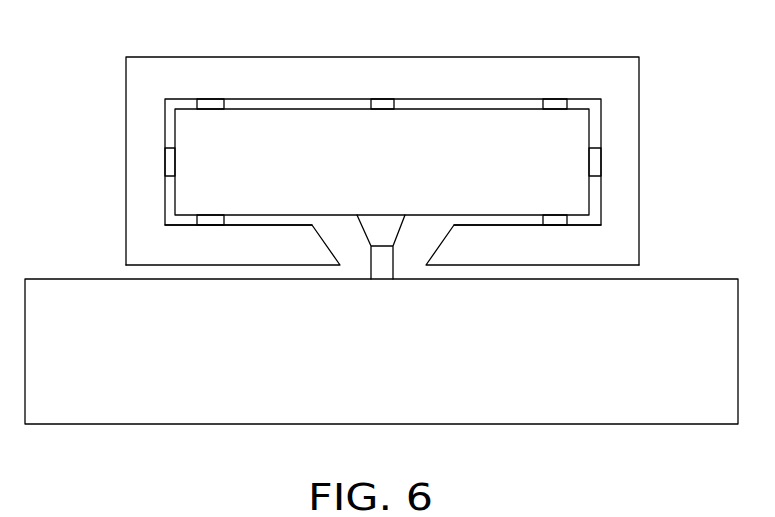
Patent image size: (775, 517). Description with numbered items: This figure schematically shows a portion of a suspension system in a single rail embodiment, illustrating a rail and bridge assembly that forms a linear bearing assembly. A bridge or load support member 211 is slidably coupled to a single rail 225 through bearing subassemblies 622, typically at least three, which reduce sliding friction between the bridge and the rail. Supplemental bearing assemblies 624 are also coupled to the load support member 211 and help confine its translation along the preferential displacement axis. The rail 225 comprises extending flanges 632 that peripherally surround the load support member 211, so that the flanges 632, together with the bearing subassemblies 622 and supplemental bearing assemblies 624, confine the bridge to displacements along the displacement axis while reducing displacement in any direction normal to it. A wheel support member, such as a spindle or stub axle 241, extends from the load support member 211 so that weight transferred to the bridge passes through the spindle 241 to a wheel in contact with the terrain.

The rail 225 is at (639, 57).
The load support member 211 is at (240, 172).
The bearing subassemblies 622 is at (197, 100).
The supplemental bearing assemblies 624 is at (165, 148).
The extending flanges 632 is at (222, 250).
The spindle 241 is at (403, 222).